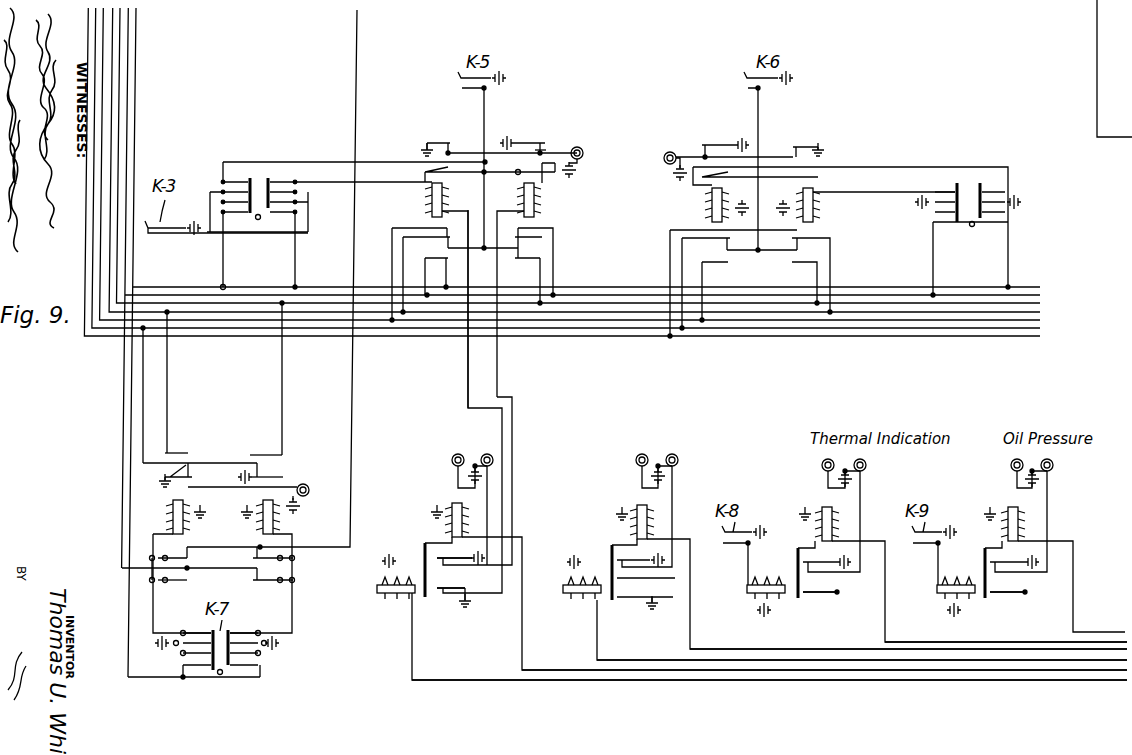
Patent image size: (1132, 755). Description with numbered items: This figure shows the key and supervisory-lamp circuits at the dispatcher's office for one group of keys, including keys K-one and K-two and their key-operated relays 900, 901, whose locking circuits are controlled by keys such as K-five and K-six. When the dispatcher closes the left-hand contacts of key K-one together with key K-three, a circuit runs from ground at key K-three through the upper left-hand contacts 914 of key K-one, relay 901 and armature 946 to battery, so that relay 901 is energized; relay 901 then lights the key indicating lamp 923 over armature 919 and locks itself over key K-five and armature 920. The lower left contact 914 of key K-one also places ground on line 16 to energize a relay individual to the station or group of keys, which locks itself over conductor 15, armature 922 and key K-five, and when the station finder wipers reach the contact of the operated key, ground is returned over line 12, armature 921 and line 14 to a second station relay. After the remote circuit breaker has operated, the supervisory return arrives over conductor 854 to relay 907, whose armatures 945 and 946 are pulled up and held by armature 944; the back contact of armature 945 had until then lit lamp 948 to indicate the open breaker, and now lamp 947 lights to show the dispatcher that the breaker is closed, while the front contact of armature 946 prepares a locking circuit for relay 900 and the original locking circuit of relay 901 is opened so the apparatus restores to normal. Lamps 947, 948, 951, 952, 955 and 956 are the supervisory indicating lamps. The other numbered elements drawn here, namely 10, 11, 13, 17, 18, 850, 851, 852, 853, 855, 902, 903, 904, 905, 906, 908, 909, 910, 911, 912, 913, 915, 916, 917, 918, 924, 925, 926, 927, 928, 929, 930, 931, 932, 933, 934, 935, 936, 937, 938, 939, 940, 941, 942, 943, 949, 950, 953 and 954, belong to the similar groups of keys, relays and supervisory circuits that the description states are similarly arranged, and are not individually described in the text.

The bus conductor 10 is at (89, 18).
The bus conductor 11 is at (96, 36).
The line 12 is at (103, 52).
The bus conductor 13 is at (112, 16).
The line 14 is at (120, 35).
The conductor 15 is at (128, 52).
The line 16 is at (136, 66).
The conductor 17 is at (357, 28).
The conductor 18 is at (1100, 35).
The conductor 850 is at (1095, 632).
The conductor 851 is at (1095, 642).
The conductor 852 is at (1065, 650).
The conductor 853 is at (1097, 661).
The conductor 854 is at (1075, 671).
The conductor 855 is at (1072, 682).
The key-operated relay 900 is at (432, 205).
The key-operated relay 901 is at (524, 196).
The relay coil 902 is at (712, 206).
The relay coil 903 is at (803, 196).
The relay coil 904 is at (183, 529).
The relay coil 905 is at (280, 529).
The thermal detector 906 is at (406, 578).
The relay 907 is at (445, 521).
The thermal detector 908 is at (595, 578).
The relay coil 909 is at (630, 519).
The thermal detector 910 is at (770, 575).
The relay coil 911 is at (822, 538).
The pressure detector 912 is at (955, 582).
The relay coil 913 is at (1008, 538).
The contacts of key K-1 914 is at (257, 224).
The switch contact 915 is at (431, 143).
The switch contact 916 is at (425, 172).
The switch contact 917 is at (446, 240).
The switch contact 918 is at (428, 259).
The armature 919 is at (526, 143).
The armature 920 is at (543, 152).
The armature 921 is at (533, 245).
The armature 922 is at (523, 280).
The key indicating lamp 923 is at (583, 150).
The indicating lamp 924 is at (671, 152).
The switch contact 925 is at (716, 145).
The switch contact 926 is at (724, 180).
The switch contact 927 is at (722, 244).
The switch contact 928 is at (710, 264).
The switch contact 929 is at (810, 147).
The switch contact 930 is at (815, 178).
The switch contact 931 is at (812, 238).
The switch contact 932 is at (808, 264).
The relay K-2 contact 933 is at (940, 190).
The relay K-2 armature indicator 934 is at (968, 228).
The contact 935 is at (187, 443).
The switch contact 936 is at (190, 474).
The switch contact 937 is at (186, 561).
The switch contact 938 is at (186, 583).
The contact 939 is at (250, 445).
The switch contact 940 is at (279, 467).
The indicating lamp 941 is at (309, 488).
The switch contact 942 is at (281, 561).
The switch contact 943 is at (283, 583).
The armature 944 is at (427, 598).
The armature 945 is at (475, 555).
The armature 946 is at (468, 590).
The supervisory indicating lamp 947 is at (456, 460).
The supervisory indicating lamp 948 is at (487, 454).
The relay armature 949 is at (798, 600).
The relay contact 950 is at (838, 591).
The supervisory indicating lamp 951 is at (817, 472).
The supervisory indicating lamp 952 is at (853, 514).
The relay armature 953 is at (985, 599).
The relay contact 954 is at (1012, 570).
The supervisory indicating lamp 955 is at (1011, 466).
The supervisory indicating lamp 956 is at (1053, 466).